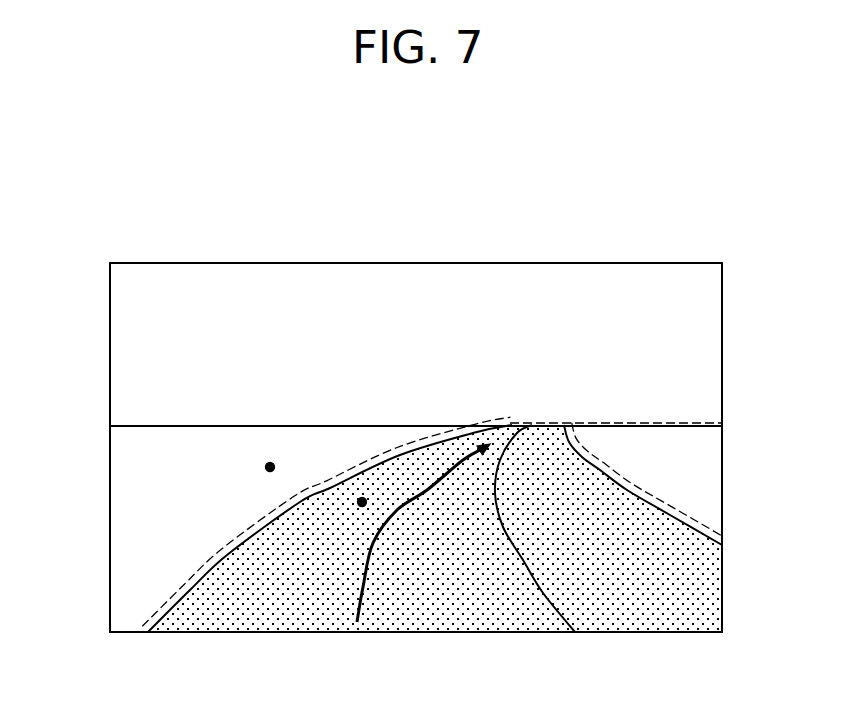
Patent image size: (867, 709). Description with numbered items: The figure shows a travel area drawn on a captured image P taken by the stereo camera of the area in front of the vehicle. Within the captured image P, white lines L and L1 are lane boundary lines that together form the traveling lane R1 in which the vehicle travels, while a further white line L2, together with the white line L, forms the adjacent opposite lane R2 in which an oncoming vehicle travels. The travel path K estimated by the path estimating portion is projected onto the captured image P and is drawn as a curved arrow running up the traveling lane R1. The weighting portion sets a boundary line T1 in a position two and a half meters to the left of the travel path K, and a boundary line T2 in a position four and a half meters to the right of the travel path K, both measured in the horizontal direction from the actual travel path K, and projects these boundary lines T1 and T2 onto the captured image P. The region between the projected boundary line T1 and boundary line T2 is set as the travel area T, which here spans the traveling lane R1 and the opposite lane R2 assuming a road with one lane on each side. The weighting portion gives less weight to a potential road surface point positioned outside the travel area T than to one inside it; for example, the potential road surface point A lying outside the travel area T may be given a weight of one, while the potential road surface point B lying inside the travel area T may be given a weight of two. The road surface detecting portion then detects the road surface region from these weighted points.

The captured image P is at (723, 283).
The potential road surface point A is at (270, 462).
The potential road surface point B is at (361, 497).
The boundary line T1 is at (267, 517).
The white line L1 is at (226, 558).
The traveling lane R1 is at (273, 624).
The travel path K is at (370, 582).
The white line L is at (537, 598).
The travel area T is at (633, 560).
The boundary line T2 is at (606, 480).
The white line L2 is at (662, 513).
The opposite lane R2 is at (703, 594).